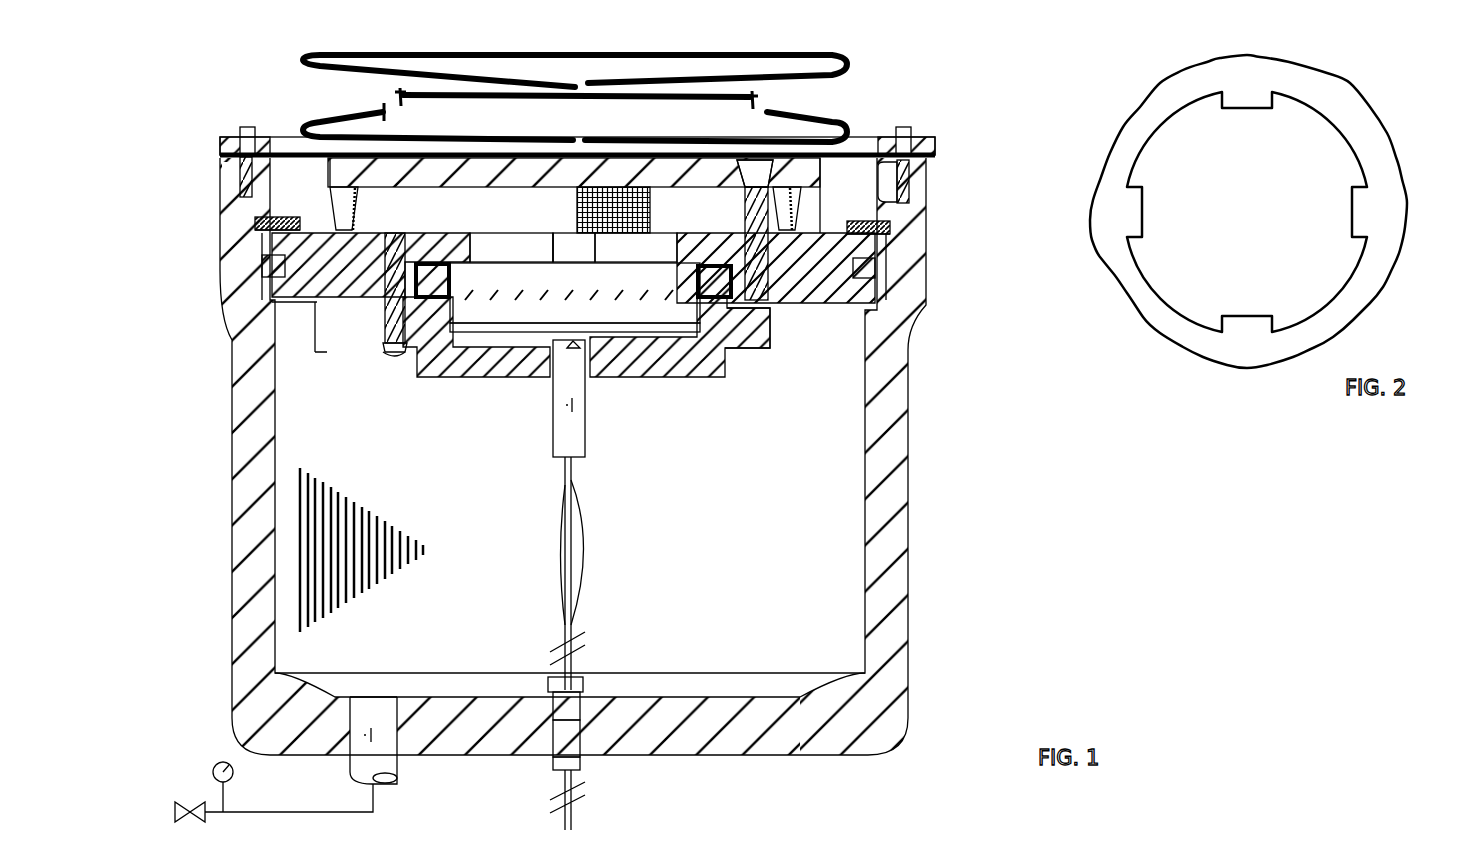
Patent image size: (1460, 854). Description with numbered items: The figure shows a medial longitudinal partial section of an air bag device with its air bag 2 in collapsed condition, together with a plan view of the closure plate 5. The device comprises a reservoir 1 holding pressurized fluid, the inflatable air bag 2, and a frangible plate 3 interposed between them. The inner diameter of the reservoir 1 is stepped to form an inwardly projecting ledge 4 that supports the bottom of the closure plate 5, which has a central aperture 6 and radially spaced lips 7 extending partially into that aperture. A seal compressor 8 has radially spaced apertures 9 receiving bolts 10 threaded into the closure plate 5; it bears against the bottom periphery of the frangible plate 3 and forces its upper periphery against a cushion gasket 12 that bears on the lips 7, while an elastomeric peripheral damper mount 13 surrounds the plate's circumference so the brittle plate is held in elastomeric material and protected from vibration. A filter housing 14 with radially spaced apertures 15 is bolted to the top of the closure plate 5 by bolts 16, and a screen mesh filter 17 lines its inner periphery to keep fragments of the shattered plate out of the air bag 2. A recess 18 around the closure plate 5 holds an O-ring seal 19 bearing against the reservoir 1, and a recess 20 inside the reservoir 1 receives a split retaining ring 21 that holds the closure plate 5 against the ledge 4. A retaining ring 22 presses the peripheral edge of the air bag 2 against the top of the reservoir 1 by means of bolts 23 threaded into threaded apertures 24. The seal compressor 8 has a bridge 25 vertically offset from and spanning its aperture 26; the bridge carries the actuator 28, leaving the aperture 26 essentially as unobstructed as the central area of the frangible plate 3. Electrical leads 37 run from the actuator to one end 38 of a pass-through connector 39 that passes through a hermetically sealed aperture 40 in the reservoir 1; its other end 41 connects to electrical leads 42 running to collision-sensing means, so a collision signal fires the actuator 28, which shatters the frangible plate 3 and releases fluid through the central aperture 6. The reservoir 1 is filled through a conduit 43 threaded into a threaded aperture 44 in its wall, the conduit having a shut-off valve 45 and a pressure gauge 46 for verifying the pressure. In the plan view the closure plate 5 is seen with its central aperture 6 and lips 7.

In FIG. 1, the reservoir 1 is at (912, 443).
In FIG. 1, the inflatable air bag 2 is at (705, 57).
In FIG. 1, the frangible plate 3 is at (488, 321).
In FIG. 1, the ledge 4 is at (278, 308).
In FIG. 1, the closure plate 5 is at (315, 347).
In FIG. 2, the closure plate 5 is at (1355, 97).
In FIG. 1, the central aperture 6 is at (636, 248).
In FIG. 2, the central aperture 6 is at (1258, 206).
In FIG. 1, the lips 7 is at (478, 255).
In FIG. 2, the lips 7 is at (1240, 110).
In FIG. 1, the seal compressor 8 is at (765, 350).
In FIG. 1, the radially spaced apertures 9 is at (383, 352).
In FIG. 1, the bolts 10 is at (388, 372).
In FIG. 1, the cushion gasket 12 is at (512, 255).
In FIG. 1, the elastomeric peripheral damper mount 13 is at (695, 285).
In FIG. 1, the filter housing 14 is at (822, 190).
In FIG. 1, the radially spaced apertures 15 is at (334, 212).
In FIG. 1, the radially spaced bolts 16 is at (757, 262).
In FIG. 1, the filter 17 is at (365, 207).
In FIG. 1, the recess 18 is at (258, 272).
In FIG. 1, the O-ring seal 19 is at (268, 250).
In FIG. 1, the recess 20 is at (262, 234).
In FIG. 1, the split retaining ring 21 is at (255, 220).
In FIG. 1, the retaining ring 22 is at (220, 147).
In FIG. 1, the radially spaced bolts 23 is at (238, 130).
In FIG. 1, the threaded apertures 24 is at (240, 176).
In FIG. 1, the bridge 25 is at (690, 378).
In FIG. 1, the aperture 26 is at (655, 325).
In FIG. 1, the actuator 28 is at (587, 423).
In FIG. 1, the electrical leads 37 is at (575, 548).
In FIG. 1, the end of pass-through connector 38 is at (586, 676).
In FIG. 1, the pass-through connector 39 is at (583, 712).
In FIG. 1, the hermetically sealed aperture 40 is at (548, 738).
In FIG. 1, the other end of pass-through connector 41 is at (583, 764).
In FIG. 1, the electrical leads 42 is at (575, 825).
In FIG. 1, the conduit 43 is at (400, 773).
In FIG. 1, the threaded aperture 44 is at (348, 735).
In FIG. 1, the shut-off valve 45 is at (188, 820).
In FIG. 1, the pressure gauge 46 is at (230, 783).